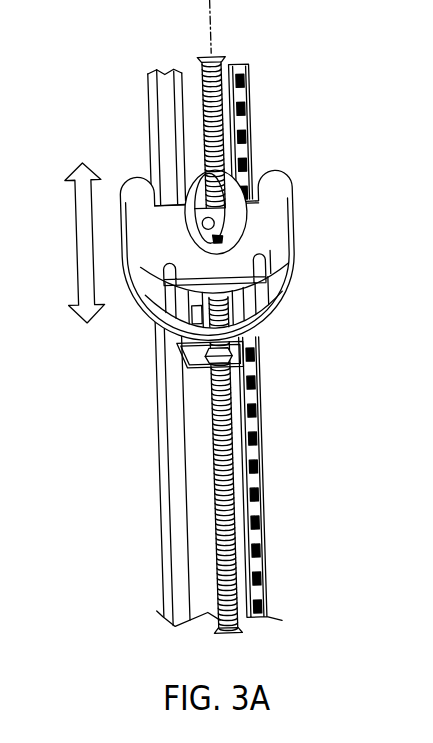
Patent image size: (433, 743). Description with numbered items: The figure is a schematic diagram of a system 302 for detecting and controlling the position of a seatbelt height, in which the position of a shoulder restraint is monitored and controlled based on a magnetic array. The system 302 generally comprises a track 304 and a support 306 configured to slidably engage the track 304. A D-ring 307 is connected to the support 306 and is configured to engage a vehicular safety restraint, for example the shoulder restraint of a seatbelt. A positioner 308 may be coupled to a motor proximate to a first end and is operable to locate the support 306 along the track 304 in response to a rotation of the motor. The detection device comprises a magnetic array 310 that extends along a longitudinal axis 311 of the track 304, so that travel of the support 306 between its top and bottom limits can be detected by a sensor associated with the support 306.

The system 302 is at (283, 98).
The track 304 is at (168, 447).
The support 306 is at (177, 356).
The D-ring 307 is at (295, 239).
The positioner 308 is at (215, 485).
The magnetic array 310 is at (263, 495).
The longitudinal axis 311 is at (210, 33).